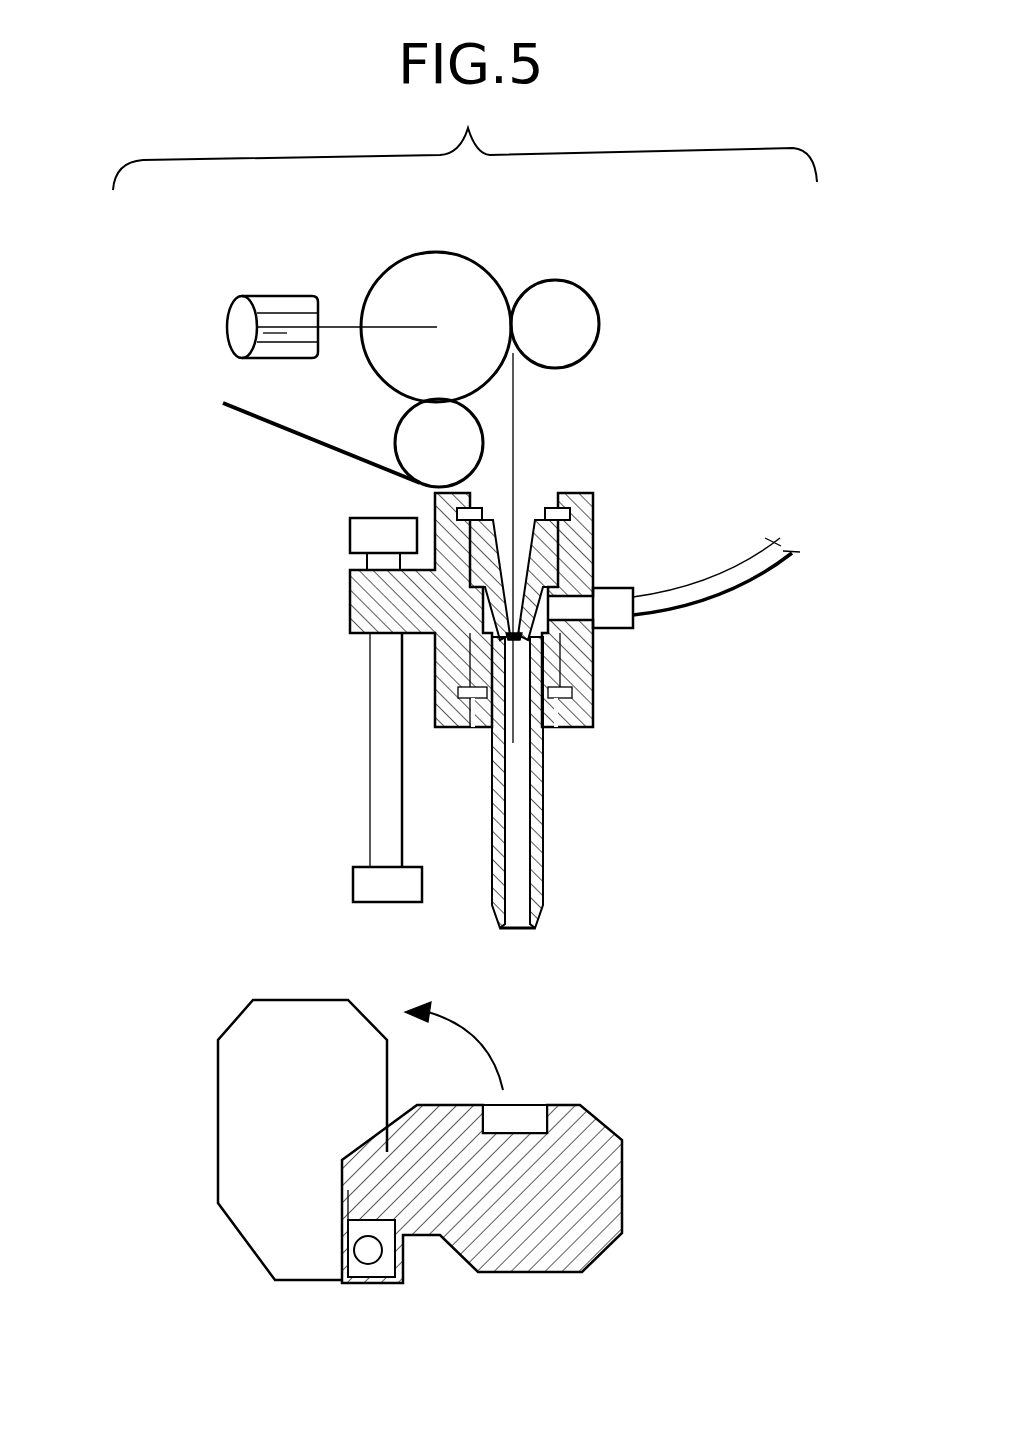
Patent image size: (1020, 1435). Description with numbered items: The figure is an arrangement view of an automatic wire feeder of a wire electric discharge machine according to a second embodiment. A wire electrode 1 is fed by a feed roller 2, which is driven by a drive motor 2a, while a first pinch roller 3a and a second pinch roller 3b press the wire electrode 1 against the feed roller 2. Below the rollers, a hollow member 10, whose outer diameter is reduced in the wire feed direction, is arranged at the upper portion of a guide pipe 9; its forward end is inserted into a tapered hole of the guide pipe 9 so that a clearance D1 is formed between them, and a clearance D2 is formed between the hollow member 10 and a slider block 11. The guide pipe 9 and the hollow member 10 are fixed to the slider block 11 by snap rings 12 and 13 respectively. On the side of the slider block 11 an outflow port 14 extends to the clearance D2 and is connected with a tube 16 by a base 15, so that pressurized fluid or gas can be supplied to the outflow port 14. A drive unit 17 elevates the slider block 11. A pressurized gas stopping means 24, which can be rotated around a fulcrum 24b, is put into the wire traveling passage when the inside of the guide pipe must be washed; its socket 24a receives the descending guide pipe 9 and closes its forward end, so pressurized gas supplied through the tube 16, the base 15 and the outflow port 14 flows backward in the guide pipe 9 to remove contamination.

The wire electrode 1 is at (255, 413).
The feed roller 2 is at (397, 277).
The drive motor 2a is at (240, 312).
The first pinch roller 3a is at (415, 423).
The second pinch roller 3b is at (568, 298).
The guide pipe 9 is at (543, 845).
The hollow member 10 is at (593, 540).
The slider block 11 is at (363, 582).
The snap ring 12 is at (555, 725).
The snap ring 13 is at (553, 497).
The outflow port 14 is at (597, 640).
The base 15 is at (617, 622).
The tube 16 is at (737, 603).
The drive unit 17 is at (375, 793).
The pressurized gas stopping means 24 is at (610, 1190).
The socket 24a is at (532, 1110).
The fulcrum 24b is at (368, 1257).
The clearance D1 is at (500, 652).
The clearance D2 is at (487, 608).